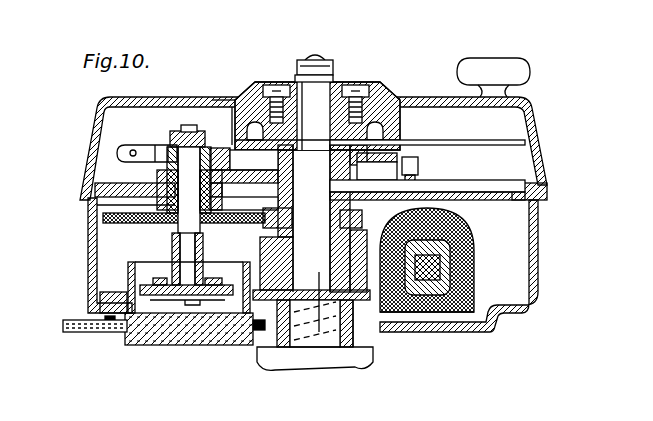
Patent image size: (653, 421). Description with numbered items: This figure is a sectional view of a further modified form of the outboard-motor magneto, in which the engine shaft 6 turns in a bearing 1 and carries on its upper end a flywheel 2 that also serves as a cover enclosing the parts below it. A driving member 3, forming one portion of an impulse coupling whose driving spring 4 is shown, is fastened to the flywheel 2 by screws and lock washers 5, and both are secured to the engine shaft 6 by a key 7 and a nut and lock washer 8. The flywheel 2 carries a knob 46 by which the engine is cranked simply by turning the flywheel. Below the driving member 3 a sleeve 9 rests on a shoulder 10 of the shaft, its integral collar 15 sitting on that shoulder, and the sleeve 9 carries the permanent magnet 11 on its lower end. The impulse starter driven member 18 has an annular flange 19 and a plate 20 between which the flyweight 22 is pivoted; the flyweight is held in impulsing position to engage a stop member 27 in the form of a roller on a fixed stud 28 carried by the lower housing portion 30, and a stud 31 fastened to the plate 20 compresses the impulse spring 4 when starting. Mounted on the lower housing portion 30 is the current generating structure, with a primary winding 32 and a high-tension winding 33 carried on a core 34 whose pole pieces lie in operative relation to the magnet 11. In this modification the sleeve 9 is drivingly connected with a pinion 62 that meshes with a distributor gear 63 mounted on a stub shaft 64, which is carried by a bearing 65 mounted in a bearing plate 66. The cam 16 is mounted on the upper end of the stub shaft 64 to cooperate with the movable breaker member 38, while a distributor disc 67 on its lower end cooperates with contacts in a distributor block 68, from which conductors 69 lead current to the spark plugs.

The bearing 1 is at (303, 337).
The flywheel 2 is at (544, 141).
The driving member 3 is at (242, 133).
The driving spring 4 is at (395, 126).
The screws and lock washers 5 is at (356, 93).
The engine shaft 6 is at (315, 322).
The key 7 is at (342, 98).
The nut and lock washer 8 is at (325, 62).
The sleeve 9 is at (320, 193).
The shoulder 10 is at (319, 348).
The permanent magnet 11 is at (80, 213).
The collar 15 is at (343, 340).
The cam 16 is at (232, 140).
The impulse starter driven member 18 is at (270, 160).
The annular flange 19 is at (251, 210).
The plate 20 is at (378, 149).
The flyweight 22 is at (425, 143).
The stop member 27 is at (420, 161).
The fixed stud 28 is at (450, 173).
The lower housing portion 30 is at (88, 268).
The stud 31 is at (213, 100).
The primary winding 32 is at (476, 265).
The high-tension winding 33 is at (478, 290).
The core 34 is at (478, 240).
The movable member 38 is at (140, 147).
The knob 46 is at (515, 72).
The pinion 62 is at (348, 229).
The distributor gear 63 is at (142, 226).
The stub shaft 64 is at (190, 212).
The bearing 65 is at (85, 235).
The bearing plate 66 is at (115, 185).
The distributor disc 67 is at (152, 298).
The distributor block 68 is at (215, 330).
The conductors 69 is at (100, 333).